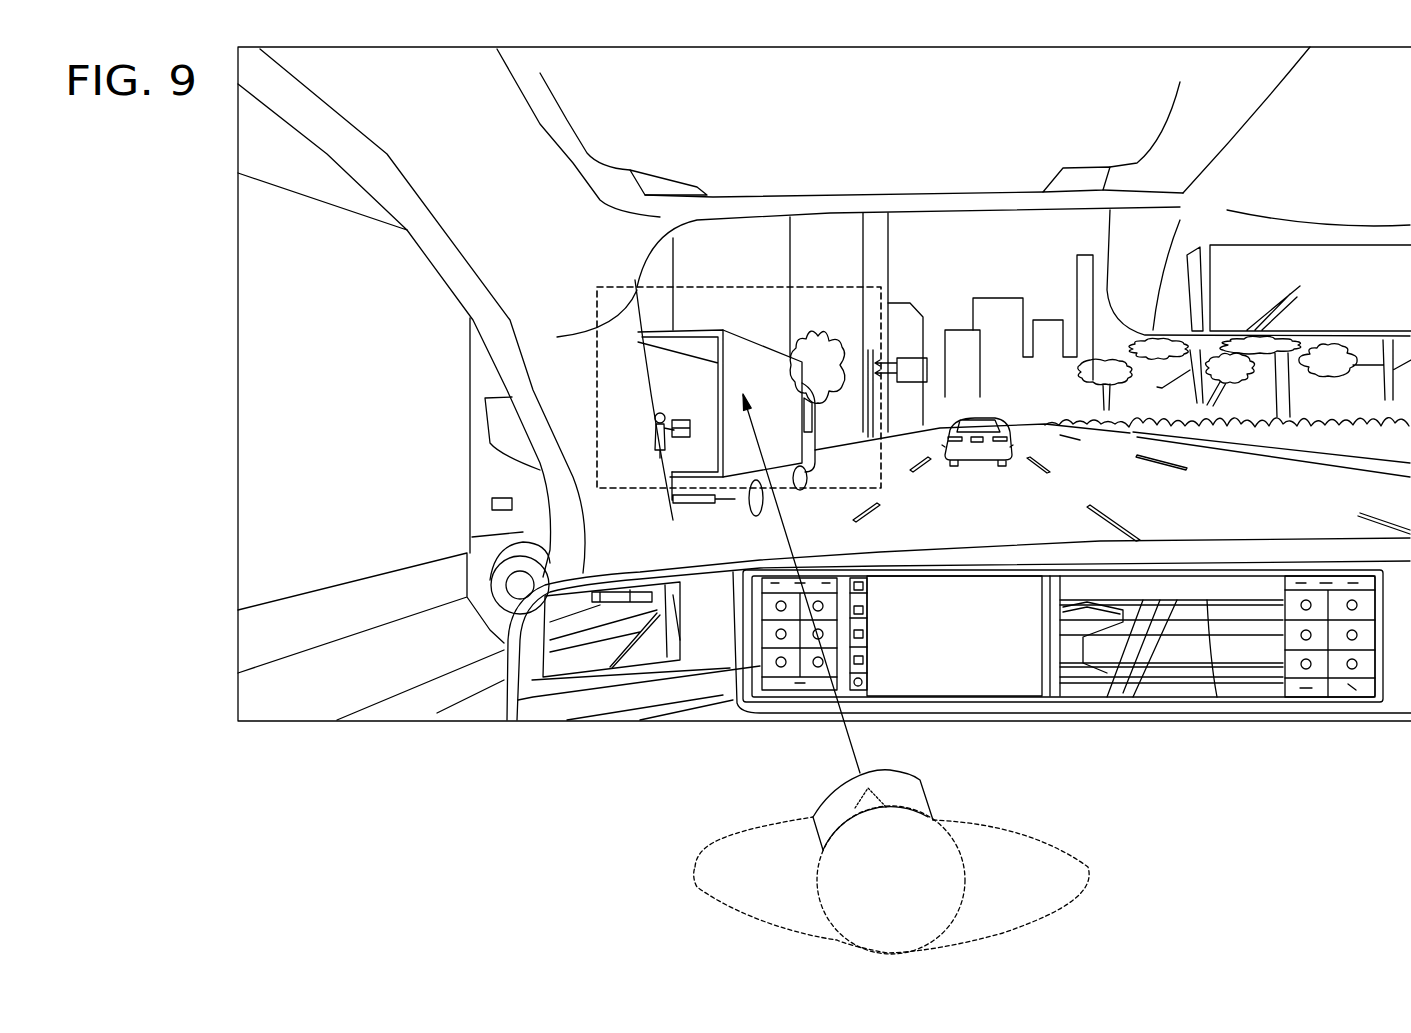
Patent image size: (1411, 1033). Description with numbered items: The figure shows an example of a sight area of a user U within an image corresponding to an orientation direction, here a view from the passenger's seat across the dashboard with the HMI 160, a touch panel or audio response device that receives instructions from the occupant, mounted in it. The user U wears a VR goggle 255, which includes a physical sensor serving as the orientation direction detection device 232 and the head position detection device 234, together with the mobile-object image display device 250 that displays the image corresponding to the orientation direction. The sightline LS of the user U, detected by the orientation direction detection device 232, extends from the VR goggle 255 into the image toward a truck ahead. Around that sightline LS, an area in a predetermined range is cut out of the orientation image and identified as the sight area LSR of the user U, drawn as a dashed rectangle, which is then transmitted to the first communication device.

The HMI 160 is at (1222, 587).
The VR goggle 255 is at (757, 805).
The orientation direction detection device 232 is at (873, 810).
The head position detection device 234 is at (873, 810).
The mobile-object image display device 250 is at (837, 787).
The sightline LS is at (848, 743).
The sight area LSR is at (737, 287).
The user U is at (695, 872).